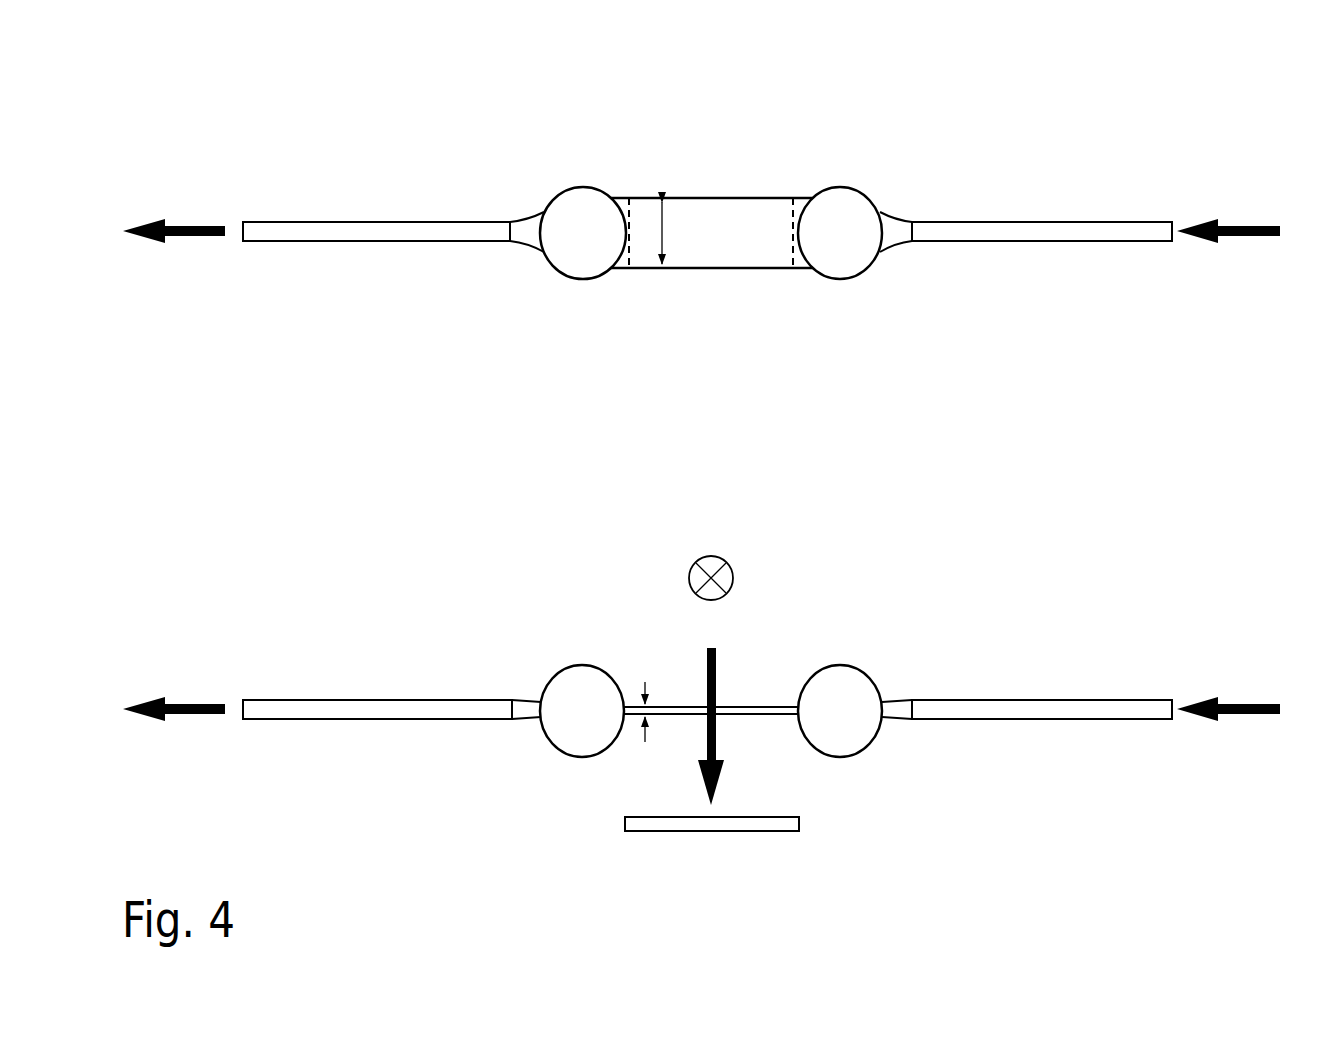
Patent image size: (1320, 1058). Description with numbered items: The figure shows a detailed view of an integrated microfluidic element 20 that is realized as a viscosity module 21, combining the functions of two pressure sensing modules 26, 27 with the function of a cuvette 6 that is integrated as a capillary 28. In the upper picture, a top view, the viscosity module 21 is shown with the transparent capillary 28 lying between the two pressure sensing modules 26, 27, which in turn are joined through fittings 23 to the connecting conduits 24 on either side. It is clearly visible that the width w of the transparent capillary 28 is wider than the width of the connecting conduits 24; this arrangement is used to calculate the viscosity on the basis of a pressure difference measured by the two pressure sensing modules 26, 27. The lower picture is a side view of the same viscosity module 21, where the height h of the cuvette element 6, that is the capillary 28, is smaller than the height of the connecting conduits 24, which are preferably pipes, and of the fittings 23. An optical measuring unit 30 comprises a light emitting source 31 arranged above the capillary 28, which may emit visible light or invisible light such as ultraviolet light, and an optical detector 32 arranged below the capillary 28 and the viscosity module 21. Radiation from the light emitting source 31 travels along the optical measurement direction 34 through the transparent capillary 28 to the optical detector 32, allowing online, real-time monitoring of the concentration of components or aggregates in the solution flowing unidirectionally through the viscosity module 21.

The integrated microfluidic element 20 is at (707, 443).
The viscosity module 21 is at (707, 443).
The fittings 23 is at (528, 232).
The connecting conduits 24 is at (403, 233).
The pressure sensing module 26 is at (578, 257).
The pressure sensing module 27 is at (841, 257).
The capillary 28 is at (783, 182).
The optical measuring unit 30 is at (703, 830).
The light emitting source 31 is at (730, 565).
The optical detector 32 is at (765, 816).
The optical measurement direction 34 is at (705, 676).
The cuvette 6 is at (687, 715).